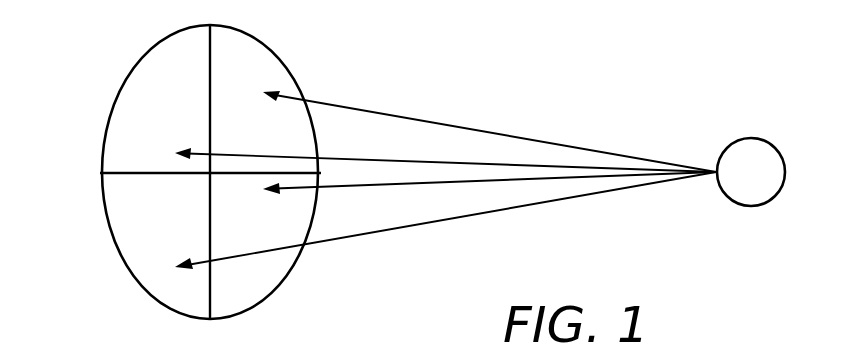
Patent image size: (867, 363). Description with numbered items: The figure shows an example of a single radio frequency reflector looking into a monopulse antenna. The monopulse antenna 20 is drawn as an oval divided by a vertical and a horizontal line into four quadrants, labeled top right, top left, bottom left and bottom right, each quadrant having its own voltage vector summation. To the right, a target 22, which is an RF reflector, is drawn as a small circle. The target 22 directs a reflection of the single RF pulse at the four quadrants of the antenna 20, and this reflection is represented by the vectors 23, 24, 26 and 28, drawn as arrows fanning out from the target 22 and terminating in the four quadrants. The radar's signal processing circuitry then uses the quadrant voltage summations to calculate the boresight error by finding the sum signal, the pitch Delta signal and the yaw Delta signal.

The monopulse antenna 20 is at (132, 70).
The target 22 is at (768, 152).
The vector 23 is at (381, 111).
The vector 24 is at (437, 162).
The vector 26 is at (490, 178).
The vector 28 is at (551, 201).